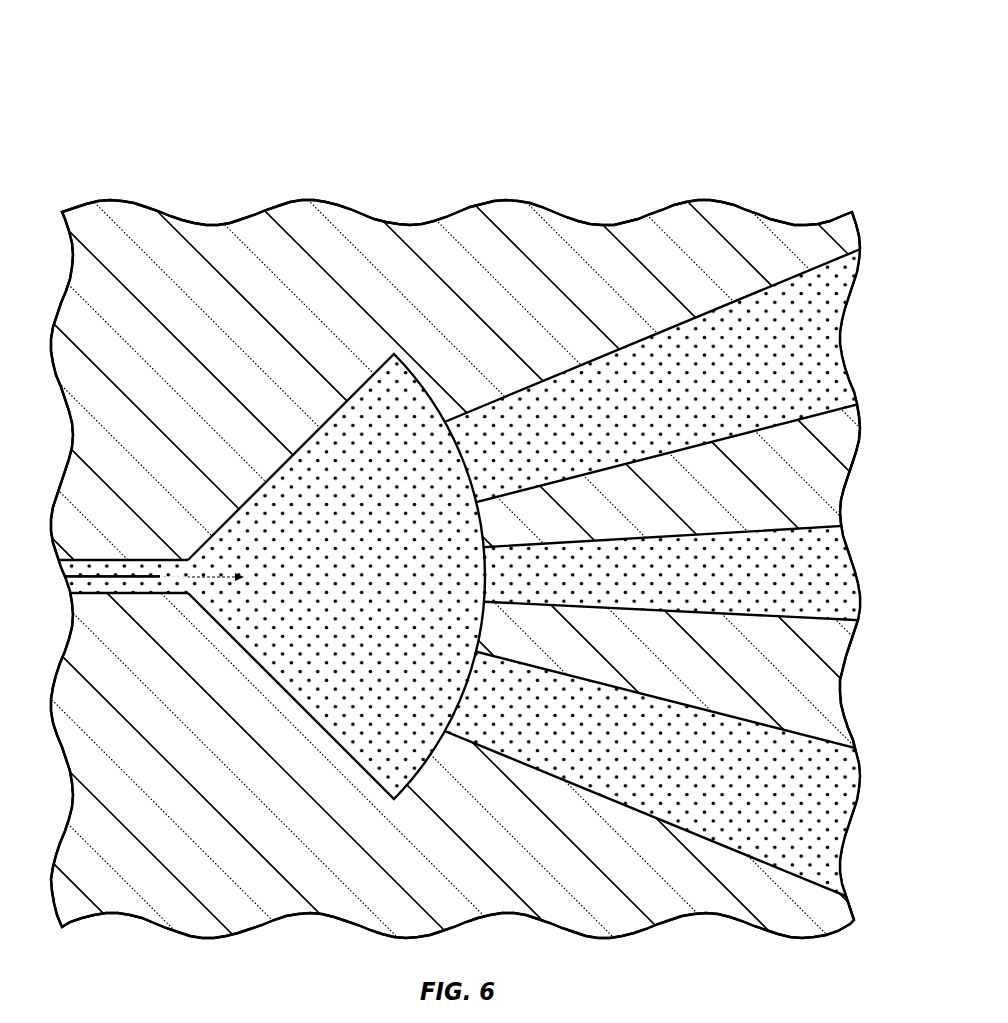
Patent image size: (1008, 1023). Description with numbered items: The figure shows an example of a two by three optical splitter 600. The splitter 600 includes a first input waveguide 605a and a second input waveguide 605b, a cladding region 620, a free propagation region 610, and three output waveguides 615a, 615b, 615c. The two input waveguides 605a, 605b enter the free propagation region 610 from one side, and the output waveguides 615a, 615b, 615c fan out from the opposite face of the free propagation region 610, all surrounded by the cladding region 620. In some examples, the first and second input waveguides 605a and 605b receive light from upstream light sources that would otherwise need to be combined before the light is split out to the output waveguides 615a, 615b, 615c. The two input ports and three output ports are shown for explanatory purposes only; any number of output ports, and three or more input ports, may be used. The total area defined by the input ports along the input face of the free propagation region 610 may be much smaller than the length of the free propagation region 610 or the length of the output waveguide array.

The two by three optical splitter 600 is at (78, 71).
The first input waveguide 605a is at (112, 560).
The second input waveguide 605b is at (113, 596).
The free propagation region 610 is at (399, 372).
The first output waveguide 615a is at (827, 335).
The second output waveguide 615b is at (836, 571).
The third output waveguide 615c is at (841, 819).
The cladding region 620 is at (247, 226).